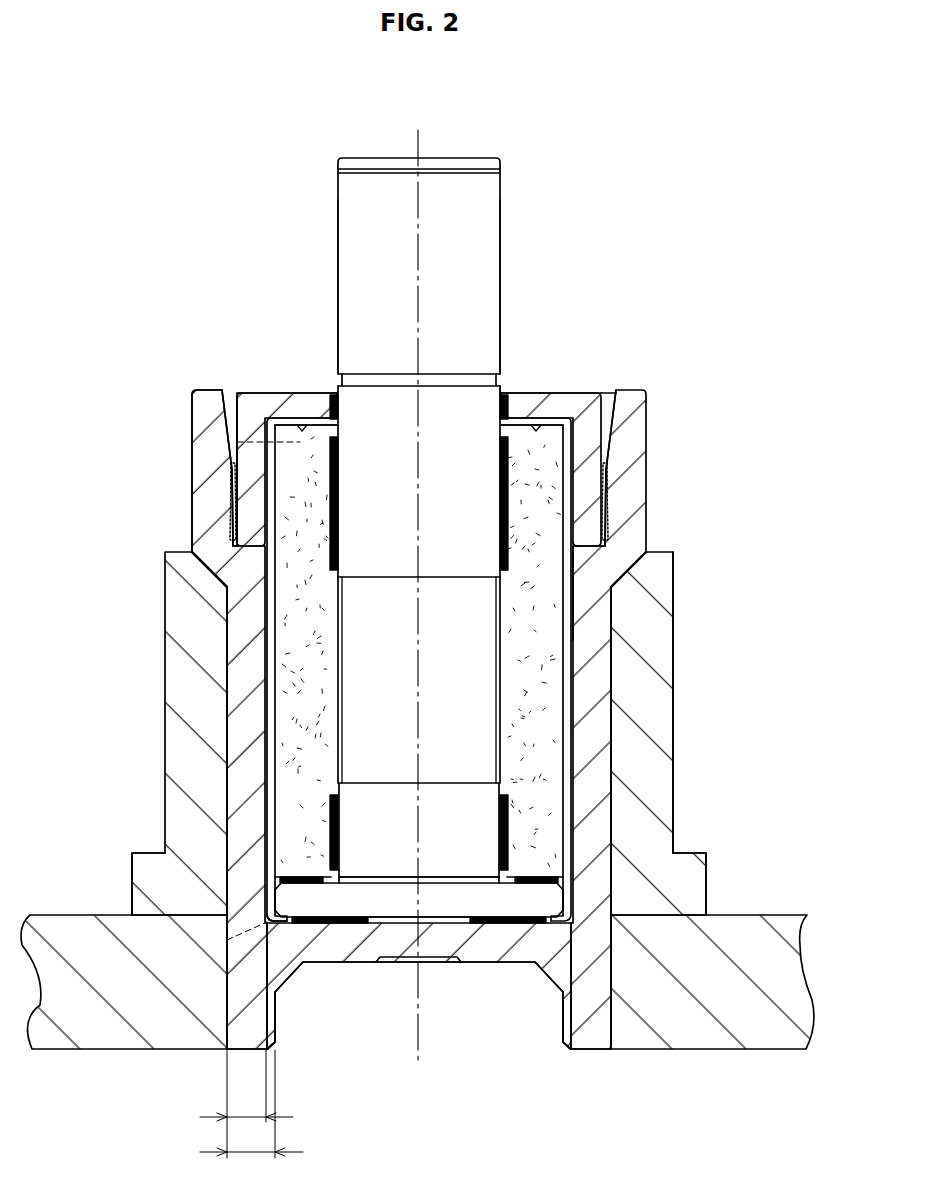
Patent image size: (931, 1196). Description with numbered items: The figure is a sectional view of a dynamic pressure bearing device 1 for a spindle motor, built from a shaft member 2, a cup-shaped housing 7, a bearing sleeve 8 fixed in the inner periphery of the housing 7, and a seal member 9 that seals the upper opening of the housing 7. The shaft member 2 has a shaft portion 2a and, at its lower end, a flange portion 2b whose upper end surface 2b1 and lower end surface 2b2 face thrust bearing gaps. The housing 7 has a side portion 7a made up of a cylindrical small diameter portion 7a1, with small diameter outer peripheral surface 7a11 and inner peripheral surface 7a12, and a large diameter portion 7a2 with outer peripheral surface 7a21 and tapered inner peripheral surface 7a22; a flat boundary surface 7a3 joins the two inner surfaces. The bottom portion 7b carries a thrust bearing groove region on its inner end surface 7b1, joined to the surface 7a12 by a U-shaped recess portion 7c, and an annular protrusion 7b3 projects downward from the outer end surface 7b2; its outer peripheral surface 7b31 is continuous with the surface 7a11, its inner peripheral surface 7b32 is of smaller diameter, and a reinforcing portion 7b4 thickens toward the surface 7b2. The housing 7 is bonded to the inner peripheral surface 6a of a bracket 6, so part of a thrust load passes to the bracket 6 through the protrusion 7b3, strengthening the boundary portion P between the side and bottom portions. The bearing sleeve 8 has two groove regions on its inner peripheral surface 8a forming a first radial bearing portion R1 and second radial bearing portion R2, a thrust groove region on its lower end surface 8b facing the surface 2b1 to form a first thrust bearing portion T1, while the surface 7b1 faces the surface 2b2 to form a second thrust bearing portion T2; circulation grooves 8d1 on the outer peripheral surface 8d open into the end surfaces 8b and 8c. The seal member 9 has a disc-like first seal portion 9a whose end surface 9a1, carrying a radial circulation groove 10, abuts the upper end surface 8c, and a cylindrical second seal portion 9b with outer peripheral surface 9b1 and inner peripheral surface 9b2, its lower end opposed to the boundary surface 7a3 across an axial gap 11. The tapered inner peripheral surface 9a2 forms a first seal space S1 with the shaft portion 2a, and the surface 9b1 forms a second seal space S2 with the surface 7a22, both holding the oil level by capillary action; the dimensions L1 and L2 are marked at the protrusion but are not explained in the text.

The dynamic pressure bearing device 1 is at (662, 356).
The shaft member 2 is at (503, 226).
The shaft portion 2a is at (352, 236).
The flange portion 2b is at (549, 884).
The upper end surface of flange portion 2b1 is at (440, 868).
The lower end surface of flange portion 2b2 is at (428, 918).
The bracket 6 is at (766, 1030).
The inner peripheral surface of bracket 6a is at (610, 1024).
The housing 7 is at (410, 748).
The side portion 7a is at (606, 664).
The small diameter portion 7a1 is at (594, 688).
The small diameter outer peripheral surface 7a11 is at (226, 706).
The small diameter inner peripheral surface 7a12 is at (268, 628).
The large diameter portion 7a2 is at (632, 432).
The large diameter outer peripheral surface 7a21 is at (192, 508).
The large diameter inner peripheral surface 7a22 is at (227, 428).
The boundary surface 7a3 is at (213, 568).
The bottom portion 7b is at (332, 947).
The inner end surface 7b1 is at (392, 915).
The outer end surface 7b2 is at (511, 966).
The protrusion 7b3 is at (590, 1030).
The outer peripheral surface of protrusion 7b31 is at (224, 1020).
The inner peripheral surface of protrusion 7b32 is at (273, 1022).
The reinforcing portion 7b4 is at (288, 1002).
The U-shaped recess portion 7c is at (267, 890).
The bearing sleeve 8 is at (548, 753).
The inner peripheral surface of bearing sleeve 8a is at (345, 660).
The lower end surface of bearing sleeve 8b is at (276, 878).
The upper end surface of bearing sleeve 8c is at (550, 396).
The outer peripheral surface of bearing sleeve 8d is at (268, 790).
The circulation groove 8d1 is at (276, 747).
The seal member 9 is at (588, 385).
The first seal portion 9a is at (300, 398).
The end surface of first seal portion 9a1 is at (606, 477).
The inner peripheral surface of first seal portion 9a2 is at (358, 395).
The second seal portion 9b is at (246, 486).
The outer peripheral surface of second seal portion 9b1 is at (612, 496).
The inner peripheral surface of second seal portion 9b2 is at (598, 602).
The circulation groove 10 is at (300, 442).
The axial gap 11 is at (627, 573).
The boundary portion P is at (572, 937).
The first radial bearing portion R1 is at (612, 540).
The second radial bearing portion R2 is at (508, 815).
The first seal space S1 is at (509, 388).
The second seal space S2 is at (610, 406).
The first thrust bearing portion T1 is at (558, 860).
The second thrust bearing portion T2 is at (510, 926).
The wall thickness dimension L1 is at (246, 1104).
The recess offset dimension L2 is at (251, 1104).